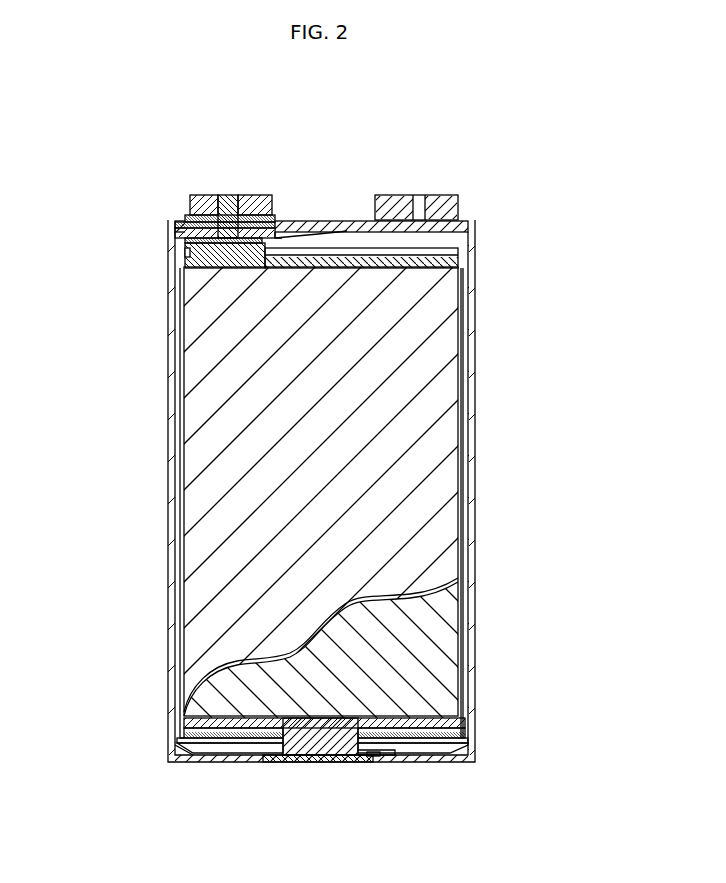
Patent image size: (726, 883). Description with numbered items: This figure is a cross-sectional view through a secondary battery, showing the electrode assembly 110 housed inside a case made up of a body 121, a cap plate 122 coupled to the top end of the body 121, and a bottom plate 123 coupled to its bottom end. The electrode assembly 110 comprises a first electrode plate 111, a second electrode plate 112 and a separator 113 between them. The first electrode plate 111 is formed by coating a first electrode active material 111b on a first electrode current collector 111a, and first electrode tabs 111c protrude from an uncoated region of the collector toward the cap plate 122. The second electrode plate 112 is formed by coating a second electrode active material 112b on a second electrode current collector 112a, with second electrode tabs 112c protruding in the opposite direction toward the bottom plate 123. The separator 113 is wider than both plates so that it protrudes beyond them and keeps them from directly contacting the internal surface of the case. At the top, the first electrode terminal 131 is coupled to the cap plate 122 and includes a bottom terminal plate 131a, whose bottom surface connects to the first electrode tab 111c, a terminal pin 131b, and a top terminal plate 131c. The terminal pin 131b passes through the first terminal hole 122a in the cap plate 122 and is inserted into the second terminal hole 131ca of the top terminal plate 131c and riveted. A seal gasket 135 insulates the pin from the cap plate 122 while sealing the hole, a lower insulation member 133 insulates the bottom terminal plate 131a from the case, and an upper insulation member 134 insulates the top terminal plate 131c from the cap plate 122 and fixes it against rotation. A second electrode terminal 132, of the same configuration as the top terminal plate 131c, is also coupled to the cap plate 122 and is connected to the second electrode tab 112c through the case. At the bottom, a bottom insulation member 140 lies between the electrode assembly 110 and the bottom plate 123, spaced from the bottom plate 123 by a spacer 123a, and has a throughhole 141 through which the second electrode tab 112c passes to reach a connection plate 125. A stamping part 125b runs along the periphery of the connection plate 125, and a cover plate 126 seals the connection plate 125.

The electrode assembly 110 is at (458, 474).
The first electrode plate 111 is at (363, 476).
The first electrode current collector 111a is at (185, 263).
The first electrode active material 111b is at (195, 322).
The first electrode tab 111c is at (185, 241).
The second electrode plate 112 is at (358, 666).
The second electrode current collector 112a is at (452, 699).
The second electrode active material 112b is at (450, 665).
The second electrode tab 112c is at (462, 740).
The separator 113 is at (457, 253).
The body 121 is at (477, 342).
The cap plate 122 is at (473, 221).
The first terminal hole 122a is at (282, 237).
The bottom plate 123 is at (435, 760).
The spacer 123a is at (182, 765).
The connection plate 125 is at (327, 752).
The stamping part 125b is at (393, 755).
The cover plate 126 is at (358, 763).
The first electrode terminal 131 is at (217, 157).
The bottom terminal plate 131a is at (210, 197).
The terminal pin 131b is at (214, 182).
The top terminal plate 131c is at (272, 197).
The second terminal hole 131ca is at (260, 174).
The second electrode terminal 132 is at (438, 195).
The lower insulation member 133 is at (347, 231).
The upper insulation member 134 is at (185, 217).
The seal gasket 135 is at (213, 223).
The bottom insulation member 140 is at (235, 745).
The throughhole 141 is at (300, 763).